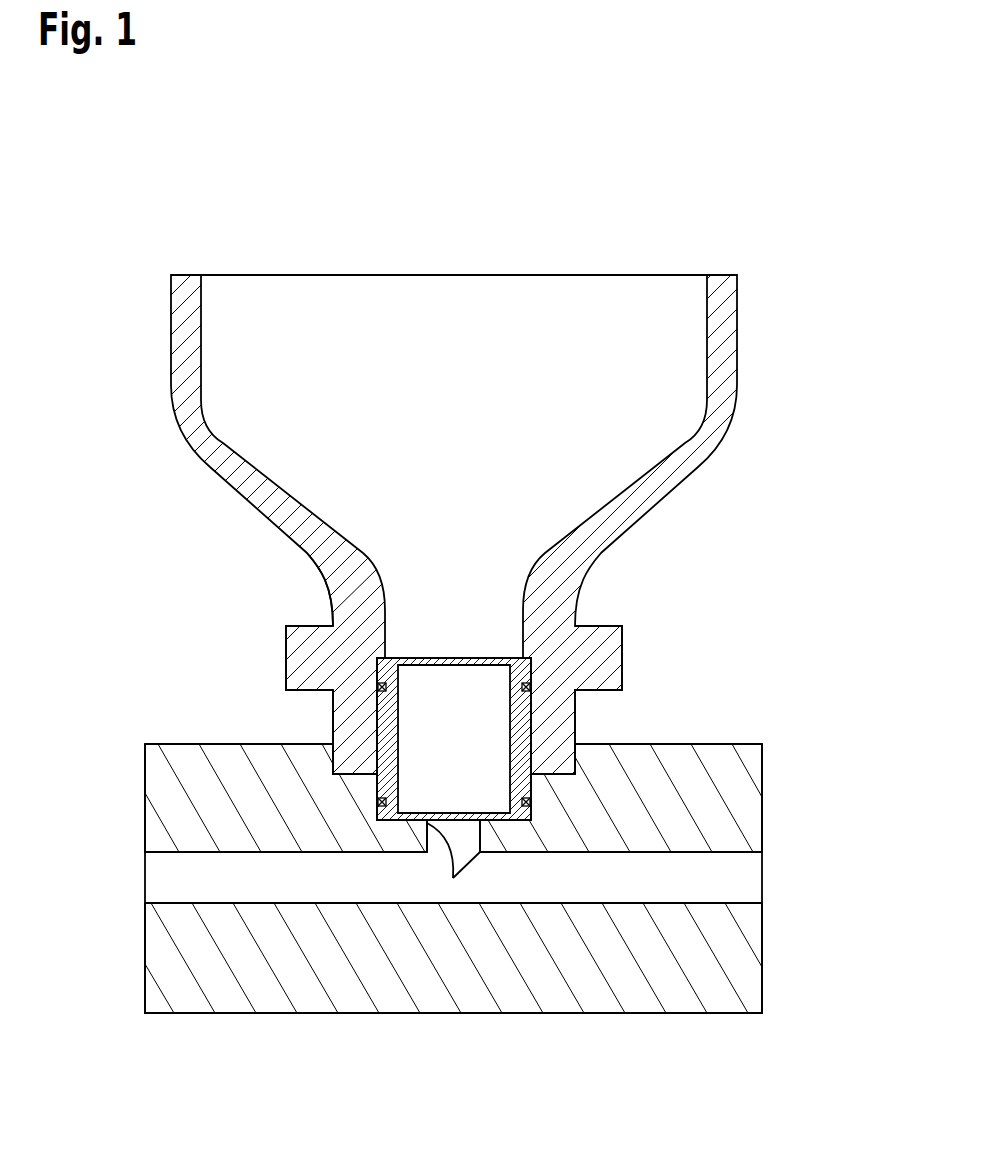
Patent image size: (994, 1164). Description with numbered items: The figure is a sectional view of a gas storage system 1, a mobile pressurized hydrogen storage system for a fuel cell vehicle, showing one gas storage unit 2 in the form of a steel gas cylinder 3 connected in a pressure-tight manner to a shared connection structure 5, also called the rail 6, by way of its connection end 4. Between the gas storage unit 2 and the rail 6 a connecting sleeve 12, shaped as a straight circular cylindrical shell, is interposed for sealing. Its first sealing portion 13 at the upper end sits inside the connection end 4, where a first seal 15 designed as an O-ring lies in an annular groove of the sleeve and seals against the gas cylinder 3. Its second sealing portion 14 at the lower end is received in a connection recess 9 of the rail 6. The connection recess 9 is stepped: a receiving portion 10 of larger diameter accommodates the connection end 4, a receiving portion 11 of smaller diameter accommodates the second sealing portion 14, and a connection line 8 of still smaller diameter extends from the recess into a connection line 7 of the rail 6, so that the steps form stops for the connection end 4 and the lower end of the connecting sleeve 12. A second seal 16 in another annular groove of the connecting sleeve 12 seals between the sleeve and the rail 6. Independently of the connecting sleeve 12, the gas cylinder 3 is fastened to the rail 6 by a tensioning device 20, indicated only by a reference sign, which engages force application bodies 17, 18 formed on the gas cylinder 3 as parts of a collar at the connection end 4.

The gas storage system 1 is at (265, 1043).
The gas storage unit 2 is at (747, 300).
The gas cylinder 3 is at (720, 348).
The connection end 4 is at (550, 720).
The shared connection structure 5 is at (638, 1010).
The rail 6 is at (467, 987).
The connection line 7 is at (510, 900).
The connection line 8 is at (452, 823).
The connection recess 9 is at (587, 787).
The receiving portion 10 is at (370, 722).
The receiving portion 11 is at (373, 758).
The connecting sleeve 12 is at (333, 698).
The first sealing portion 13 is at (333, 615).
The second sealing portion 14 is at (425, 823).
The first seal 15 is at (373, 683).
The second seal 16 is at (384, 790).
The force application body 17 is at (303, 655).
The force application body 18 is at (600, 646).
The tensioning device 20 is at (623, 625).